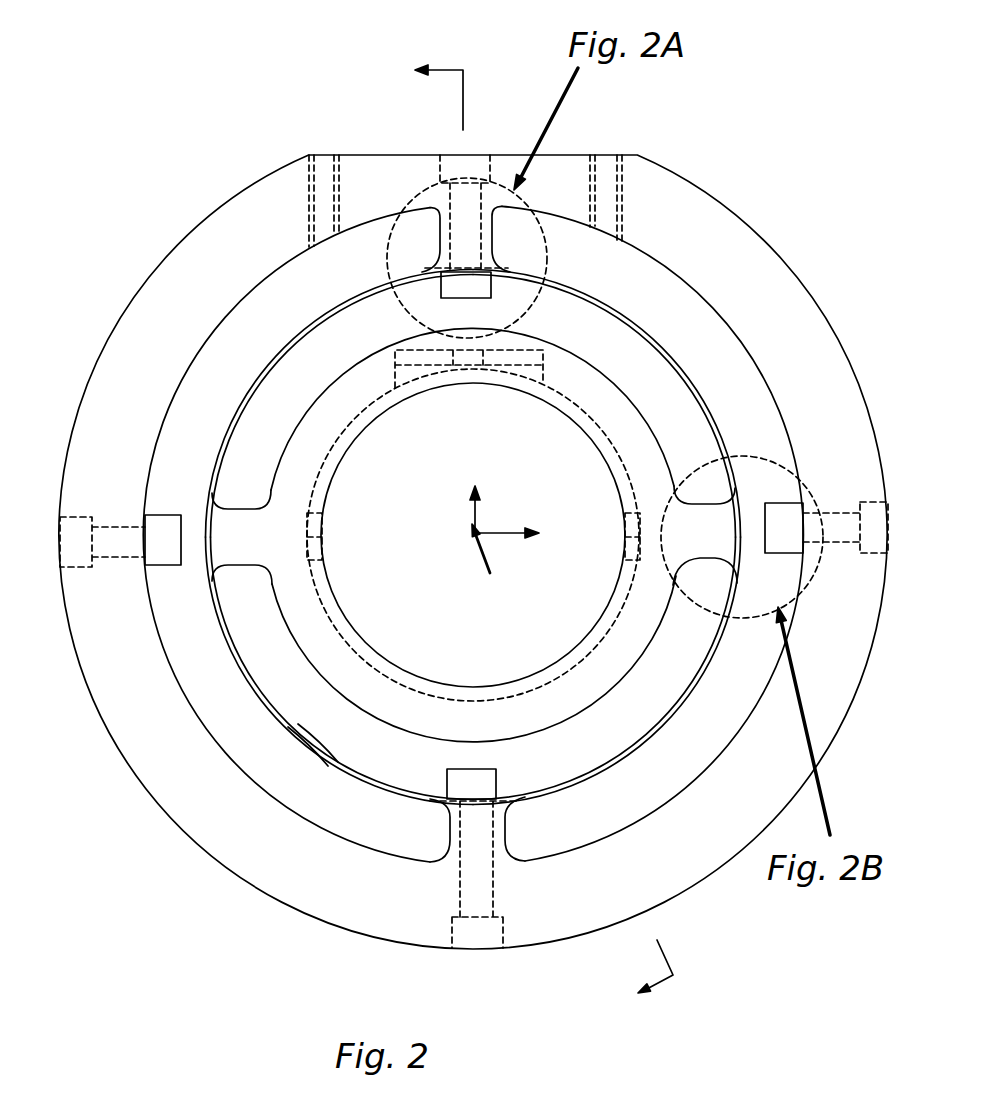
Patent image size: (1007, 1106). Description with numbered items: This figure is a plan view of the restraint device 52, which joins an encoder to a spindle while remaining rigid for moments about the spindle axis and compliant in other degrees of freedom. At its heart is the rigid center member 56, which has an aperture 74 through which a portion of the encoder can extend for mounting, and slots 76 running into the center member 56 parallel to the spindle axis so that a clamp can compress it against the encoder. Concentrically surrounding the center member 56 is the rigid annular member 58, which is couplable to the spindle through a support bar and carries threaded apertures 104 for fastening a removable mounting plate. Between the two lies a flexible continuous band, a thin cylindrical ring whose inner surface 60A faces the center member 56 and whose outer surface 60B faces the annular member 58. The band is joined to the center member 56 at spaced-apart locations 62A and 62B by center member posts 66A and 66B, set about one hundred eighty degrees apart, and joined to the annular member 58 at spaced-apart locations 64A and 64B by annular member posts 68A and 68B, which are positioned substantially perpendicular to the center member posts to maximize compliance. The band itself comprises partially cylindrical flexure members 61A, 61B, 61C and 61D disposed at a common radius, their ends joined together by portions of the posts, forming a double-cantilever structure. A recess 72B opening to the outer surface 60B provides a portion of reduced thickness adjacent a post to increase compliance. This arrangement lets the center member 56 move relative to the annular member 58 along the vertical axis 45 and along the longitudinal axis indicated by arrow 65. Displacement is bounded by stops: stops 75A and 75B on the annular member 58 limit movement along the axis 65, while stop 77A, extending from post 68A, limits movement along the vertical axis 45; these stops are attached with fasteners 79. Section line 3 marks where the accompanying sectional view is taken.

The section line 3- 3 is at (544, 533).
The vertical axis 45 is at (472, 512).
The restraint device 52 is at (473, 534).
The center member 56 is at (438, 490).
The annular member 58 is at (788, 266).
The inner surface 60A is at (300, 737).
The outer surface 60B is at (327, 765).
The flexure member 61A is at (628, 305).
The flexure member 61B is at (673, 720).
The flexure member 61C is at (236, 655).
The flexure member 61D is at (262, 372).
The spaced-apart location 62A is at (707, 482).
The spaced-apart location 62B is at (243, 484).
The spaced-apart location 64A is at (524, 236).
The spaced-apart location 64B is at (432, 836).
The longitudinal axis arrow 65 is at (503, 535).
The center member post 66A is at (712, 558).
The center member post 66B is at (237, 568).
The annular member post 68A is at (393, 213).
The annular member post 68B is at (505, 830).
The recess 72B is at (497, 784).
The aperture 74 is at (342, 606).
The stop 75A is at (773, 503).
The stop 75B is at (160, 515).
The slots 76 is at (321, 524).
The stop 77A is at (491, 284).
The fasteners 79 is at (503, 156).
The threaded apertures 104 is at (300, 201).